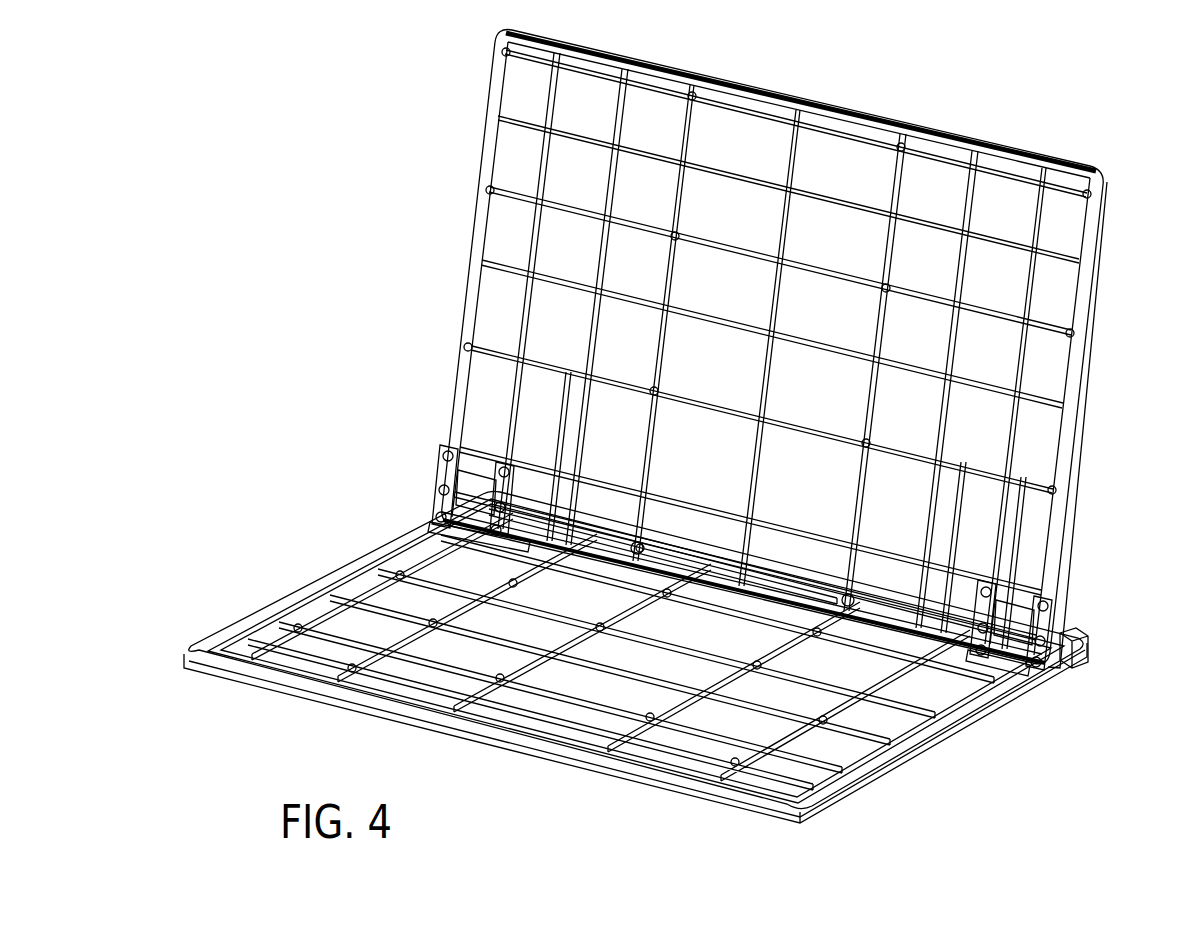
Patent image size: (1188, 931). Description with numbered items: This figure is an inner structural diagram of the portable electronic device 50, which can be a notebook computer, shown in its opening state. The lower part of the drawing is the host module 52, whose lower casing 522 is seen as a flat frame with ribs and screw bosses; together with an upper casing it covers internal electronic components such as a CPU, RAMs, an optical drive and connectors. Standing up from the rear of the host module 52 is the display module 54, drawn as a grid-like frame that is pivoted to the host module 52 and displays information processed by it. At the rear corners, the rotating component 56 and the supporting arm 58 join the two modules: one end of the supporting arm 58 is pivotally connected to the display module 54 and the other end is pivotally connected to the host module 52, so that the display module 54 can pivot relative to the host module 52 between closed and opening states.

The portable electronic device 50 is at (681, 423).
The host module 52 is at (635, 657).
The lower casing 522 is at (968, 728).
The display module 54 is at (1122, 325).
The rotating component 56 is at (1057, 663).
The supporting arm 58 is at (1063, 632).